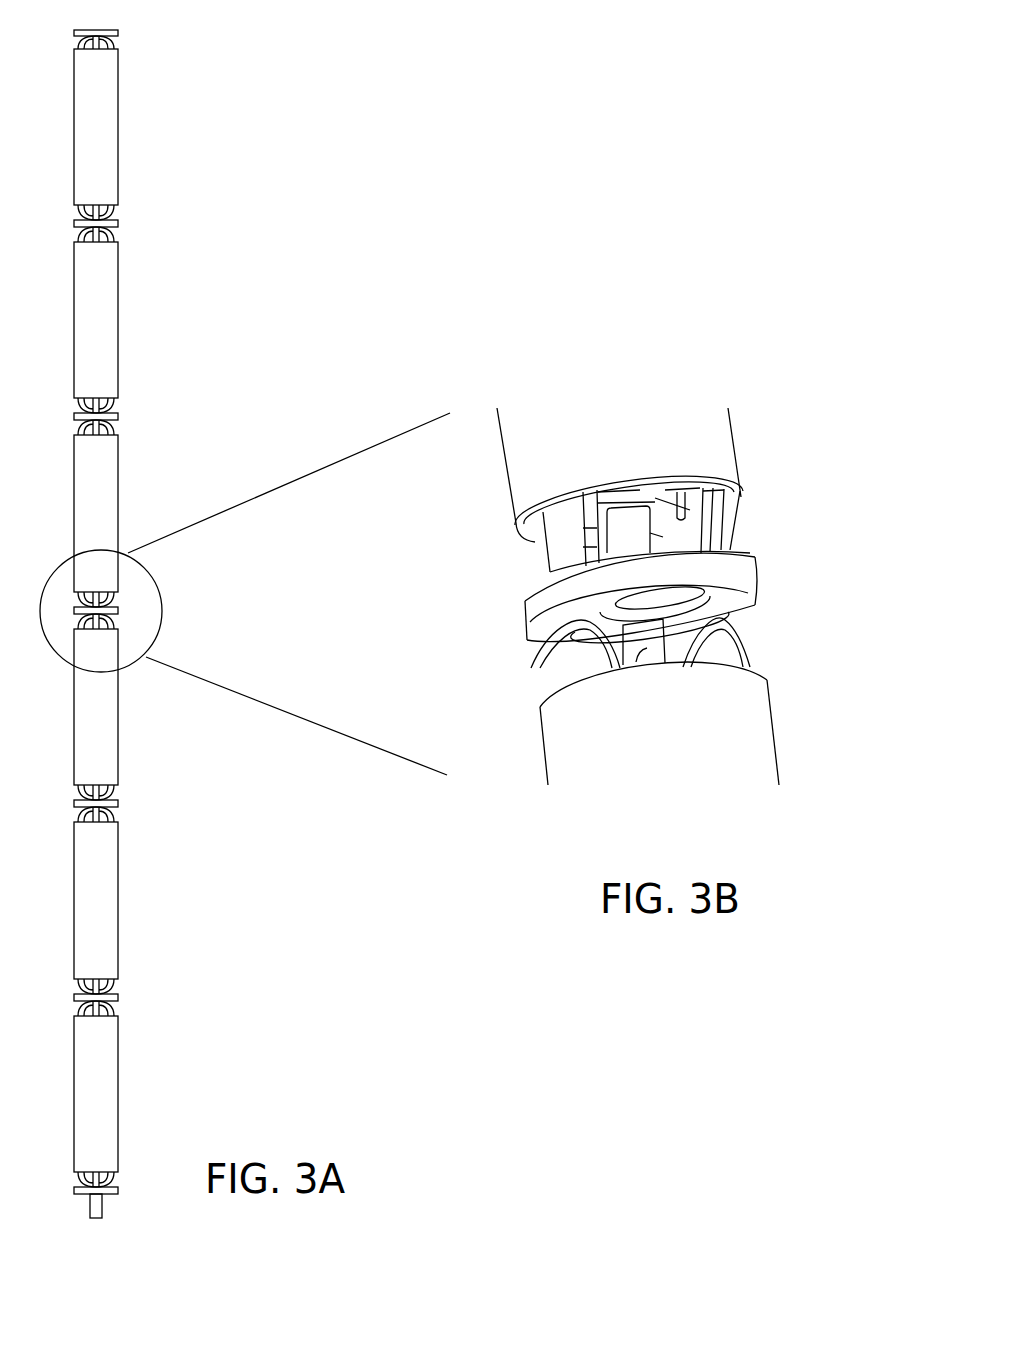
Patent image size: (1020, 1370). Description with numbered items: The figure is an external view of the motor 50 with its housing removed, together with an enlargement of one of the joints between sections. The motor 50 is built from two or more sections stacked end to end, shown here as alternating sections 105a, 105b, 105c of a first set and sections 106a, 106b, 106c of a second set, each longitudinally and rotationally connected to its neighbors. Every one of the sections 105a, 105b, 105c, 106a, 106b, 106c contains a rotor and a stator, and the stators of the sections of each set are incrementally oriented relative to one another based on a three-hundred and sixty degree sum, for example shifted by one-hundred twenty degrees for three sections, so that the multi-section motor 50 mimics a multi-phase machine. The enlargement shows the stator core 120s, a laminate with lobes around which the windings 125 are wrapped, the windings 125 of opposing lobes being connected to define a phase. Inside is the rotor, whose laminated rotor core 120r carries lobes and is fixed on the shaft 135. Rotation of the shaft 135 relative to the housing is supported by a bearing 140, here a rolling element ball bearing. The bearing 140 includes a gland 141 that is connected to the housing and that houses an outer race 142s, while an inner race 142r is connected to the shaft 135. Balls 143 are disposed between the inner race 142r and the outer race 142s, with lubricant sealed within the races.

In FIG. 3A, the motor 50 is at (303, 131).
In FIG. 3A, the section 105a is at (118, 1085).
In FIG. 3A, the section 105b is at (118, 748).
In FIG. 3A, the section 105c is at (118, 317).
In FIG. 3A, the section 106a is at (118, 897).
In FIG. 3A, the section 106b is at (118, 498).
In FIG. 3A, the section 106c is at (118, 133).
In FIG. 3B, the stator core 120s is at (502, 458).
In FIG. 3B, the rotor core 120r is at (664, 500).
In FIG. 3B, the windings 125 is at (543, 548).
In FIG. 3B, the bearing 140 is at (395, 633).
In FIG. 3B, the gland 141 is at (528, 617).
In FIG. 3B, the inner race 142r is at (553, 632).
In FIG. 3B, the outer race 142s is at (728, 623).
In FIG. 3B, the balls 143 is at (740, 602).
In FIG. 3B, the shaft 135 is at (650, 647).